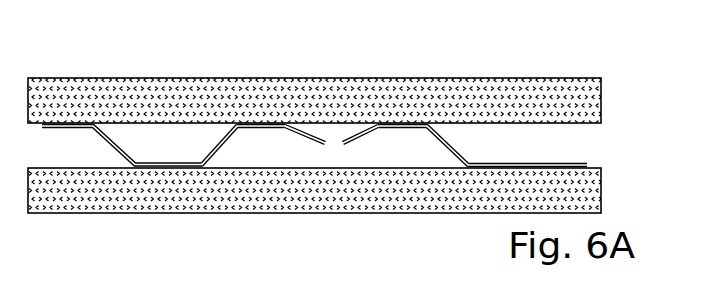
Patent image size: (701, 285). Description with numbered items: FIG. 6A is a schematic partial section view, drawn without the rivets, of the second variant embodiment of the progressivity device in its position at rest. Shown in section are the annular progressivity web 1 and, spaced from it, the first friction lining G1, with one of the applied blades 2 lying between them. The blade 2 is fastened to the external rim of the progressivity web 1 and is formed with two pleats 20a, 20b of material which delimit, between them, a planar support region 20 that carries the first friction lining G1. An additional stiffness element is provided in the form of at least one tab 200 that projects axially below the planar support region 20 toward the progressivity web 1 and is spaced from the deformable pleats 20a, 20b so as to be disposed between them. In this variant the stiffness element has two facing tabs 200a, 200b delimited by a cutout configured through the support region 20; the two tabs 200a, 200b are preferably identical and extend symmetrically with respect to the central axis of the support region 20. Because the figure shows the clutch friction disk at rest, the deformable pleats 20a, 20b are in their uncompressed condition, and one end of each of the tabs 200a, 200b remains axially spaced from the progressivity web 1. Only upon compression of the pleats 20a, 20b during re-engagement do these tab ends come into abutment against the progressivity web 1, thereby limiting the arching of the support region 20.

The first friction lining G1 is at (125, 85).
The progressivity web 1 is at (82, 205).
The blade 2 is at (461, 150).
The support region 20 is at (330, 123).
The deformable pleat 20a is at (445, 142).
The deformable pleat 20b is at (217, 143).
The tab 200 is at (317, 191).
The tab 200a is at (333, 191).
The tab 200b is at (297, 132).